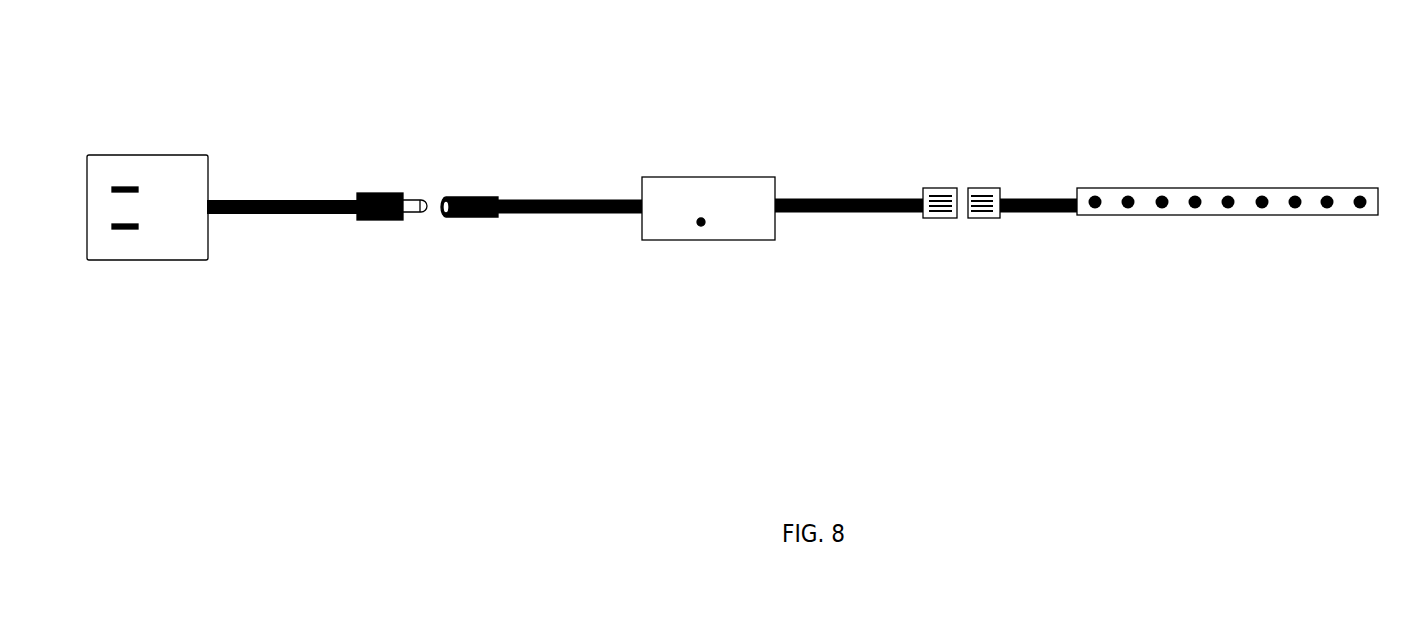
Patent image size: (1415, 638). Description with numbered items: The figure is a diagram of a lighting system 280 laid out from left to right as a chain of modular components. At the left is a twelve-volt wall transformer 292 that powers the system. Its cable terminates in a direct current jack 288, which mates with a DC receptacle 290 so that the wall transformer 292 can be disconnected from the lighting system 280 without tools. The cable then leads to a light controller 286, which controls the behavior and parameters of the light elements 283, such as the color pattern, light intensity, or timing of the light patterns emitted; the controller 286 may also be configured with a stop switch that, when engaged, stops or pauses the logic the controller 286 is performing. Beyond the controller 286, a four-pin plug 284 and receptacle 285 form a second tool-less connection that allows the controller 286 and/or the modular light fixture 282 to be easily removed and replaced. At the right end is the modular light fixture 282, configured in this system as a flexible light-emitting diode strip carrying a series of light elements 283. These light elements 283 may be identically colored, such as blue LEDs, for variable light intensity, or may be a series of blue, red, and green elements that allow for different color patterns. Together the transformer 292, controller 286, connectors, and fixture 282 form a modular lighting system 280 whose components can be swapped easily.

The lighting system 280 is at (826, 50).
The modular light fixture 282 is at (1228, 188).
The light elements 283 is at (1323, 188).
The 4-pin plug 284 is at (942, 218).
The receptacle 285 is at (977, 218).
The light controller 286 is at (730, 240).
The direct current (DC) jack 288 is at (382, 220).
The DC receptacle 290 is at (463, 217).
The 12-volt wall transformer 292 is at (160, 260).